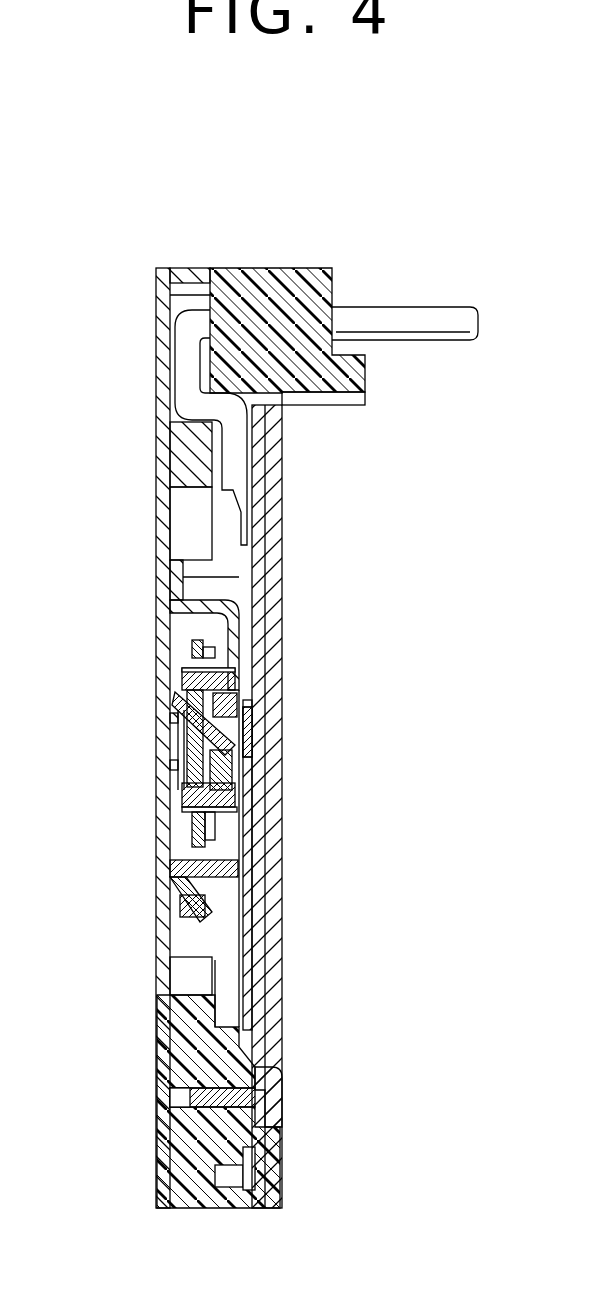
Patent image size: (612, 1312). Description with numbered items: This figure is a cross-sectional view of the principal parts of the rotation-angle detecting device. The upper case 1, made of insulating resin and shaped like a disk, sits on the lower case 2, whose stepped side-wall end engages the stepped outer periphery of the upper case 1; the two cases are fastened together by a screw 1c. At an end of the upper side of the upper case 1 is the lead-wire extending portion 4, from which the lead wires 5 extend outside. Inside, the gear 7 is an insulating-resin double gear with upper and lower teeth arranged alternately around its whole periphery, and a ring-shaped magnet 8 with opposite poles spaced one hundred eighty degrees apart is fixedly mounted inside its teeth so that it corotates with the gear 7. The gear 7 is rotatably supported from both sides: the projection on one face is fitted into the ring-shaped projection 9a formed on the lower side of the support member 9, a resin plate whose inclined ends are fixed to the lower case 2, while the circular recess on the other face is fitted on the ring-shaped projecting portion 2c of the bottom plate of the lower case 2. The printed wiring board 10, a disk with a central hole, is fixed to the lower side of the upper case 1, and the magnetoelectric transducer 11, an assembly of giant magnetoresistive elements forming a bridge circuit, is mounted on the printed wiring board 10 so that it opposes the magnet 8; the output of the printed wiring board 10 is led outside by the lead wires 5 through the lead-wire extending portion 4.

The upper case 1 is at (296, 948).
The screw 1c is at (273, 1090).
The lower case 2 is at (142, 1063).
The ring-shaped projecting portion 2c is at (160, 770).
The lead-wire extending portion 4 is at (292, 280).
The lead wires 5 is at (425, 322).
The gear 7 is at (160, 787).
The ring-shaped magnets 8 is at (160, 818).
The support members 9 is at (173, 910).
The ring-shaped projections 9a is at (280, 703).
The printed wiring board 10 is at (280, 813).
The magnetoelectric transducers 11 is at (280, 738).